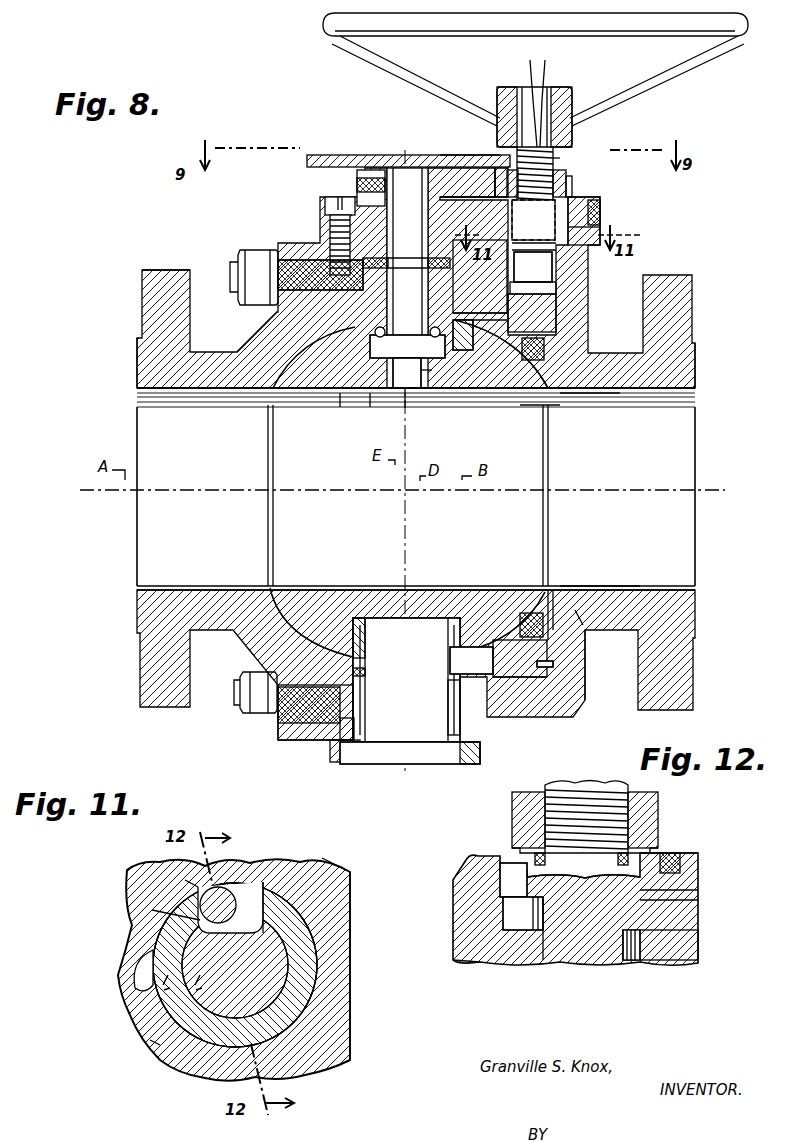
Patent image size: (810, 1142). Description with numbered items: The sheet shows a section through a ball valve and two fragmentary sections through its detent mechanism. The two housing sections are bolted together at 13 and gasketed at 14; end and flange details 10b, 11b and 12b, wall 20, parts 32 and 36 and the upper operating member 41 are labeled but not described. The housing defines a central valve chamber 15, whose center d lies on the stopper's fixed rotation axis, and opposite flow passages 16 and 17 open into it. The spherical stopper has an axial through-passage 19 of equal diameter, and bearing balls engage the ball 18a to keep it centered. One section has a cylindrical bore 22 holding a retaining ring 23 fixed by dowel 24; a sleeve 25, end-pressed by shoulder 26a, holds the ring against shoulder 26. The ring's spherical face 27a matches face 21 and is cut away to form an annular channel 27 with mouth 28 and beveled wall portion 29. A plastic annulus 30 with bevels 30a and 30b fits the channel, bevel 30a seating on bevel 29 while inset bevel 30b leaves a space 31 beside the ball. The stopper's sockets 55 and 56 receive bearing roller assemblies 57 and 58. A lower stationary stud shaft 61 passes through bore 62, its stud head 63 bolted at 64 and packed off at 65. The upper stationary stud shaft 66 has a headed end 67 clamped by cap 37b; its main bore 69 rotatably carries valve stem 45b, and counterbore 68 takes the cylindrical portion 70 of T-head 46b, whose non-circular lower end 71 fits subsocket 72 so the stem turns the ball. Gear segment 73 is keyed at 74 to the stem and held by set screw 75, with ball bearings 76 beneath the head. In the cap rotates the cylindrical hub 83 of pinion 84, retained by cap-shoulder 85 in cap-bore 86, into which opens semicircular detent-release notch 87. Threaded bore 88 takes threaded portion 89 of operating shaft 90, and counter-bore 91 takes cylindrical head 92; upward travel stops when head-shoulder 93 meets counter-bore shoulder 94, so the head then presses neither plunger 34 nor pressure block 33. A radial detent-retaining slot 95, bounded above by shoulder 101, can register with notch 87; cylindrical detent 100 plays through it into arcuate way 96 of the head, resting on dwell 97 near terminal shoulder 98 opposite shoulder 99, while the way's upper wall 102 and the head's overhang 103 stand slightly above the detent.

In FIG. 8, the handwheel 41 is at (748, 30).
In FIG. 8, the pinion 84 is at (535, 173).
In FIG. 12, the pinion 84 is at (628, 800).
In FIG. 8, the threaded bore 88 is at (560, 180).
In FIG. 8, the counter-bore shoulder 94 is at (570, 190).
In FIG. 12, the counter-bore shoulder 94 is at (520, 853).
In FIG. 8, the operating shaft 90 is at (555, 162).
In FIG. 8, the threaded portion 89 is at (556, 165).
In FIG. 8, the key 74 is at (395, 155).
In FIG. 8, the gear segment 73 is at (450, 155).
In FIG. 8, the cap 37b is at (592, 205).
In FIG. 11, the cap 37b is at (340, 868).
In FIG. 12, the cap 37b is at (690, 860).
In FIG. 8, the cap-shoulder 85 is at (600, 212).
In FIG. 12, the cap-shoulder 85 is at (668, 862).
In FIG. 8, the cap-bore 86 is at (600, 227).
In FIG. 11, the cap-bore 86 is at (270, 882).
In FIG. 12, the cap-bore 86 is at (670, 895).
In FIG. 8, the main bore 69 is at (388, 300).
In FIG. 8, the valve stem 45b is at (406, 287).
In FIG. 8, the set screw 75 is at (357, 185).
In FIG. 8, the headed end 67 is at (328, 205).
In FIG. 8, the stationary stud shaft 66 is at (330, 240).
In FIG. 8, the bolts 13 is at (263, 242).
In FIG. 8, the flange 10b is at (170, 268).
In FIG. 8, the body end 11b is at (137, 352).
In FIG. 8, the body end 12b is at (695, 360).
In FIG. 8, the head-shoulder 93 is at (497, 187).
In FIG. 12, the head-shoulder 93 is at (655, 835).
In FIG. 8, the detent-release notch 87 is at (474, 208).
In FIG. 11, the detent-release notch 87 is at (138, 965).
In FIG. 8, the plunger 34 is at (553, 265).
In FIG. 8, the ring 36 is at (555, 290).
In FIG. 8, the pressure block 33 is at (556, 312).
In FIG. 8, the packing 32 is at (545, 338).
In FIG. 8, the ball bearings 76 is at (480, 285).
In FIG. 8, the counterbore 68 is at (468, 330).
In FIG. 8, the cylindrical portion 70 is at (445, 355).
In FIG. 8, the lower end 71 is at (437, 373).
In FIG. 8, the subsocket 72 is at (404, 408).
In FIG. 8, the socket 55 is at (350, 352).
In FIG. 8, the space 31 is at (512, 370).
In FIG. 8, the body wall 20 is at (285, 365).
In FIG. 8, the ball 18a is at (305, 407).
In FIG. 8, the bearing roller assembly 57 is at (345, 407).
In FIG. 8, the T-head 46b is at (366, 410).
In FIG. 8, the annulus 30 is at (515, 407).
In FIG. 8, the beveled portion 29 is at (575, 407).
In FIG. 8, the axial through-passage 19 is at (408, 495).
In FIG. 8, the socket 56 is at (352, 600).
In FIG. 8, the face 27a is at (485, 595).
In FIG. 8, the flow passage 16 is at (158, 496).
In FIG. 8, the flow passage 17 is at (653, 496).
In FIG. 8, the stationary stud shaft 61 is at (406, 680).
In FIG. 8, the bearing roller assembly 58 is at (365, 640).
In FIG. 8, the shoulder 26a is at (365, 675).
In FIG. 8, the bore 62 is at (448, 705).
In FIG. 8, the gasket 14 is at (322, 685).
In FIG. 8, the bolts 64 is at (330, 742).
In FIG. 8, the packing 65 is at (352, 740).
In FIG. 8, the stud head 63 is at (425, 748).
In FIG. 8, the cylindrical bore 22 is at (468, 764).
In FIG. 8, the sleeve 25 is at (488, 717).
In FIG. 8, the central valve chamber 15 is at (520, 677).
In FIG. 8, the retaining ring 23 is at (545, 680).
In FIG. 8, the annular mouth 28 is at (530, 613).
In FIG. 8, the bevel 30b is at (522, 600).
In FIG. 8, the face 21 is at (560, 600).
In FIG. 8, the bevel 30a is at (585, 600).
In FIG. 8, the annular channel 27 is at (583, 625).
In FIG. 8, the shoulder 26 is at (553, 664).
In FIG. 8, the dowel 24 is at (565, 650).
In FIG. 11, the cylindrical hub 83 is at (312, 975).
In FIG. 12, the cylindrical hub 83 is at (675, 905).
In FIG. 11, the counter-bore 91 is at (300, 928).
In FIG. 12, the counter-bore 91 is at (680, 925).
In FIG. 11, the arcuate dwell 97 is at (235, 965).
In FIG. 11, the terminal shoulder 98 is at (204, 970).
In FIG. 11, the terminal shoulder 99 is at (221, 973).
In FIG. 11, the way 96 is at (290, 888).
In FIG. 12, the way 96 is at (550, 935).
In FIG. 11, the detent-retaining slot 95 is at (221, 888).
In FIG. 12, the detent-retaining slot 95 is at (510, 925).
In FIG. 11, the cylindrical detent 100 is at (185, 880).
In FIG. 12, the cylindrical detent 100 is at (475, 962).
In FIG. 11, the center of valve chamber d is at (152, 910).
In FIG. 11, the head 92 is at (150, 1040).
In FIG. 12, the head 92 is at (600, 935).
In FIG. 12, the upper defining wall 102 is at (560, 880).
In FIG. 12, the shoulder 101 is at (500, 880).
In FIG. 12, the overhang 103 is at (535, 930).